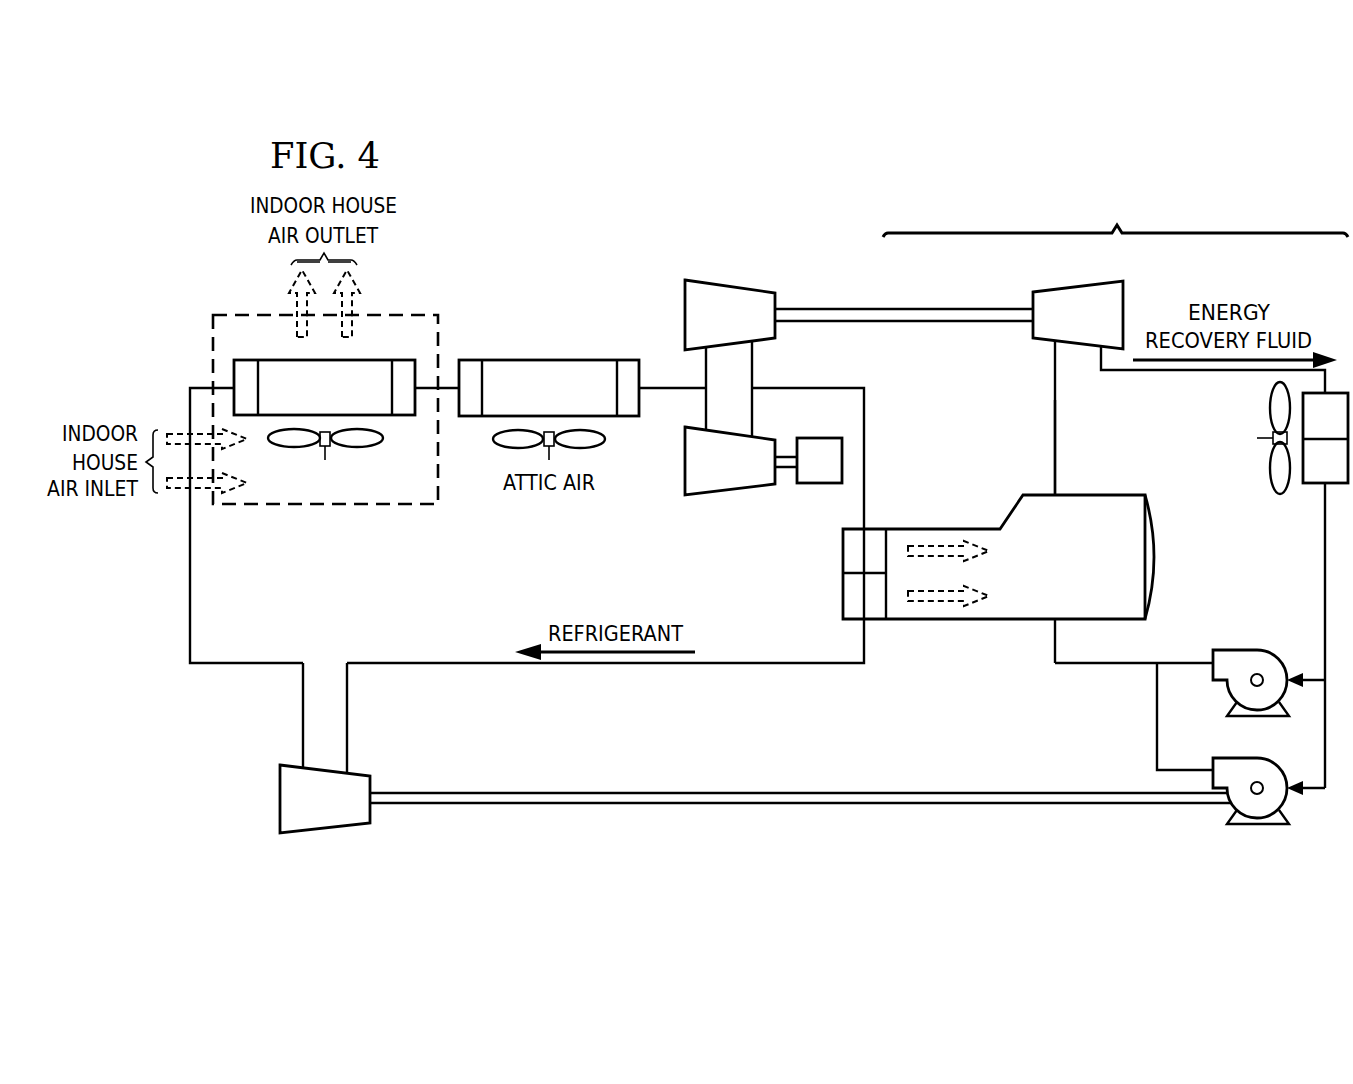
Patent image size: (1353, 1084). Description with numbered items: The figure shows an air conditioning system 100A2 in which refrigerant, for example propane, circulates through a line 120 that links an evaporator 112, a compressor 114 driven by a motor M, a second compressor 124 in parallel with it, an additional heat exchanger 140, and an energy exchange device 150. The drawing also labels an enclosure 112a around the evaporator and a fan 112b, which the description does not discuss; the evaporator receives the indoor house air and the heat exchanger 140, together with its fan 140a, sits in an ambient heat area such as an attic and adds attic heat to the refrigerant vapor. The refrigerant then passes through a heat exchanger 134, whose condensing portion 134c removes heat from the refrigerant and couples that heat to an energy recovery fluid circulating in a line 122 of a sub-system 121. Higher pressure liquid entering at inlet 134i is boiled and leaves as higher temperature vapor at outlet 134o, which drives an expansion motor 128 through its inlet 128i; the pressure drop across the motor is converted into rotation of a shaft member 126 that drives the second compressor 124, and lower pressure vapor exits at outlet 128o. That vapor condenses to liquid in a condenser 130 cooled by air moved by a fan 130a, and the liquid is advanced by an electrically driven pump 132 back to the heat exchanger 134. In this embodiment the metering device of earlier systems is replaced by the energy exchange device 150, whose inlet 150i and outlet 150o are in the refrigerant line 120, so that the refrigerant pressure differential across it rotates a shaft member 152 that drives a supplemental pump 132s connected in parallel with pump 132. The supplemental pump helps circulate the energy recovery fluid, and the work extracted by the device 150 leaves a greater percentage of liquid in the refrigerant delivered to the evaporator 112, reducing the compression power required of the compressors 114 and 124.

The air conditioning system 100A2 is at (562, 211).
The evaporator 112 is at (345, 401).
The indoor unit enclosure 112a is at (207, 337).
The indoor fan 112b is at (355, 445).
The compressor 114 is at (748, 473).
The line 120 is at (610, 665).
The sub-system 121 is at (1115, 214).
The line 122 is at (1088, 665).
The second compressor 124 is at (748, 327).
The rotating shaft member 126 is at (897, 307).
The expansion motor 128 is at (1098, 327).
The inlet 128i is at (1055, 383).
The outlet 128o is at (1093, 358).
The condenser 130 is at (1315, 483).
The fan 130a is at (1271, 410).
The pump 132 is at (1260, 650).
The supplemental pump 132s is at (1258, 824).
The heat exchanger 134 is at (1093, 577).
The condensing portion 134c is at (843, 549).
The outlet 134o is at (1055, 447).
The inlet 134i is at (1055, 641).
The heat exchanger 140 is at (569, 401).
The fan 140a is at (590, 447).
The energy exchange device 150 is at (345, 811).
The outlet 150o is at (303, 708).
The inlet 150i is at (347, 708).
The rotating shaft member 152 is at (793, 793).